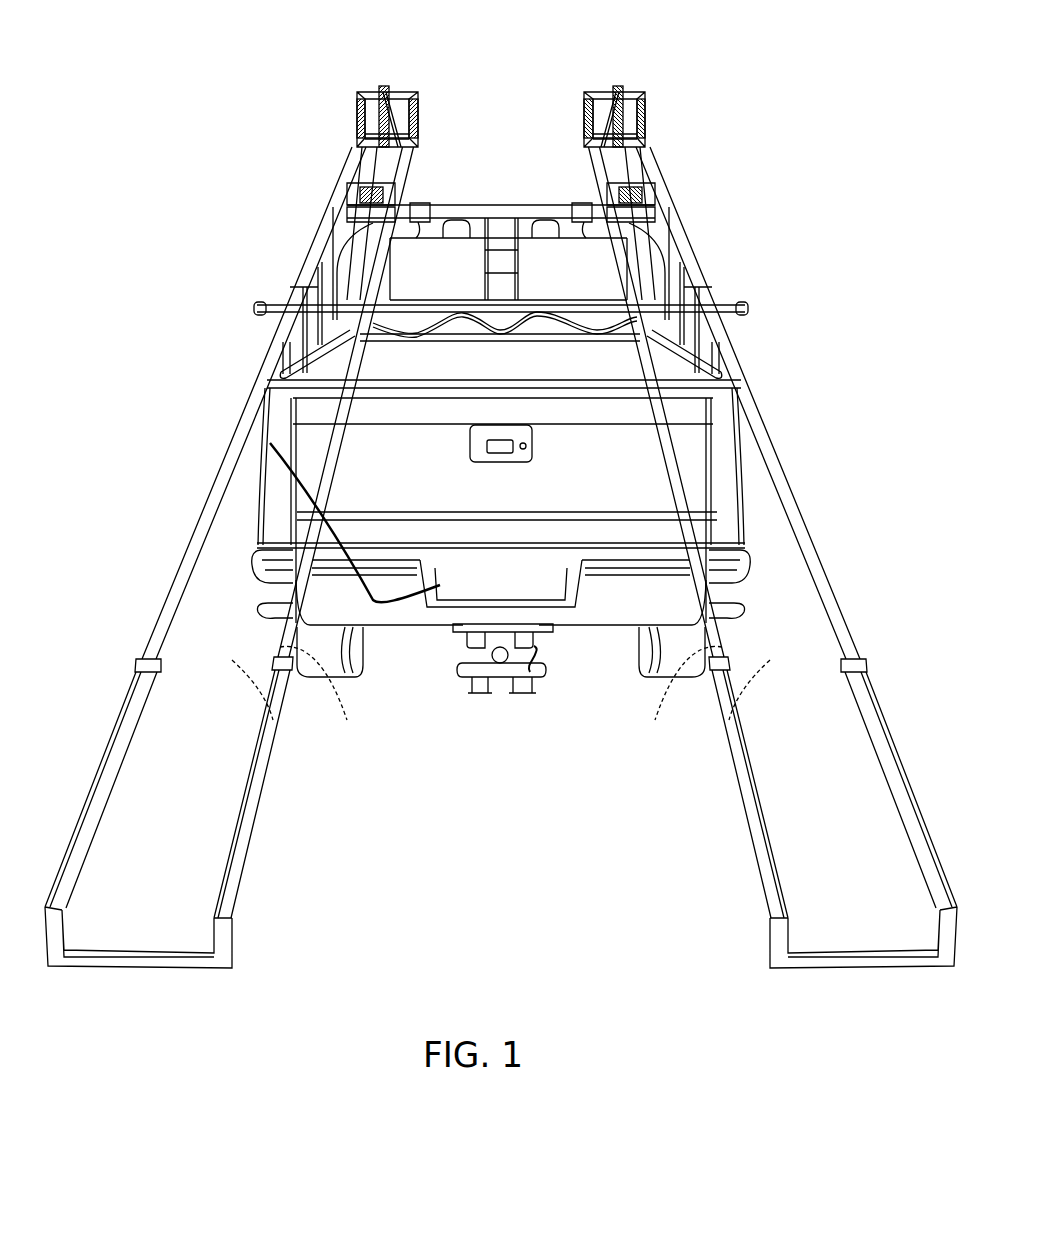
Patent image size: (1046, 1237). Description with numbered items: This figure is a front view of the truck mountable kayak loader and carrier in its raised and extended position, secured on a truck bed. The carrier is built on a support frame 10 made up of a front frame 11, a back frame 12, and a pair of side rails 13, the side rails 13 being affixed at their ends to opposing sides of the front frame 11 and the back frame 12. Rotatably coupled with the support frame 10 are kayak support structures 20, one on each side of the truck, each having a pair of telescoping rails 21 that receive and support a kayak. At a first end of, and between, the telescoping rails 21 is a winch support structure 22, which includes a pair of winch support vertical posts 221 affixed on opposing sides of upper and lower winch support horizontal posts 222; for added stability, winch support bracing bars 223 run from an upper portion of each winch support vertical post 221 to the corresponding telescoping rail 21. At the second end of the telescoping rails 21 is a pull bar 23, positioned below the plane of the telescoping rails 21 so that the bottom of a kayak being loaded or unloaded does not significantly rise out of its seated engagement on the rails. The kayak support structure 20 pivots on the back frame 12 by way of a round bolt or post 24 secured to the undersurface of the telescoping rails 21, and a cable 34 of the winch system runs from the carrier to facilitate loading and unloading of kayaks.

The support frame 10 is at (516, 200).
The front frame 11 is at (491, 212).
The back frame 12 is at (430, 297).
The side rails 13 is at (283, 345).
The kayak support structure 20 is at (191, 458).
The telescoping rails 21 is at (150, 650).
The winch support structure 22 is at (376, 91).
The pull bar 23 is at (147, 960).
The round bolt or post 24 is at (620, 105).
The cable 34 is at (358, 160).
The winch support vertical posts 221 is at (585, 108).
The winch support horizontal posts 222 is at (612, 88).
The winch support bracing bars 223 is at (358, 106).